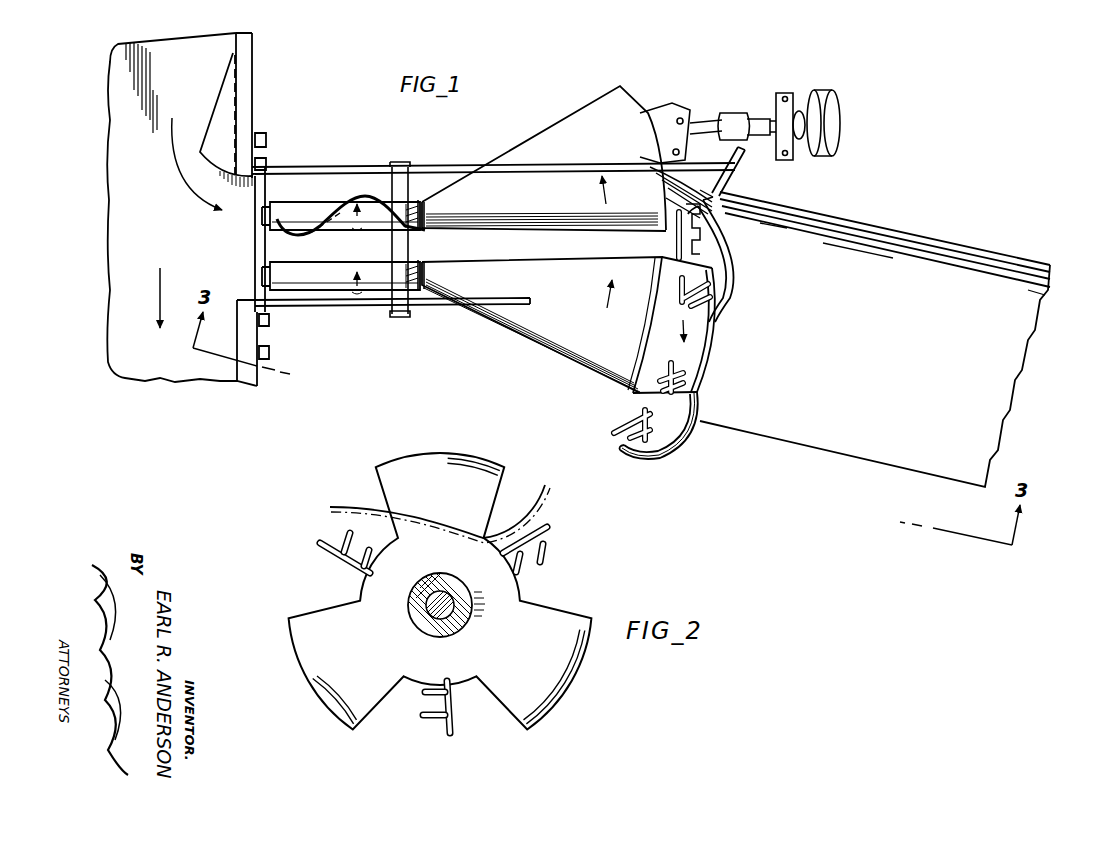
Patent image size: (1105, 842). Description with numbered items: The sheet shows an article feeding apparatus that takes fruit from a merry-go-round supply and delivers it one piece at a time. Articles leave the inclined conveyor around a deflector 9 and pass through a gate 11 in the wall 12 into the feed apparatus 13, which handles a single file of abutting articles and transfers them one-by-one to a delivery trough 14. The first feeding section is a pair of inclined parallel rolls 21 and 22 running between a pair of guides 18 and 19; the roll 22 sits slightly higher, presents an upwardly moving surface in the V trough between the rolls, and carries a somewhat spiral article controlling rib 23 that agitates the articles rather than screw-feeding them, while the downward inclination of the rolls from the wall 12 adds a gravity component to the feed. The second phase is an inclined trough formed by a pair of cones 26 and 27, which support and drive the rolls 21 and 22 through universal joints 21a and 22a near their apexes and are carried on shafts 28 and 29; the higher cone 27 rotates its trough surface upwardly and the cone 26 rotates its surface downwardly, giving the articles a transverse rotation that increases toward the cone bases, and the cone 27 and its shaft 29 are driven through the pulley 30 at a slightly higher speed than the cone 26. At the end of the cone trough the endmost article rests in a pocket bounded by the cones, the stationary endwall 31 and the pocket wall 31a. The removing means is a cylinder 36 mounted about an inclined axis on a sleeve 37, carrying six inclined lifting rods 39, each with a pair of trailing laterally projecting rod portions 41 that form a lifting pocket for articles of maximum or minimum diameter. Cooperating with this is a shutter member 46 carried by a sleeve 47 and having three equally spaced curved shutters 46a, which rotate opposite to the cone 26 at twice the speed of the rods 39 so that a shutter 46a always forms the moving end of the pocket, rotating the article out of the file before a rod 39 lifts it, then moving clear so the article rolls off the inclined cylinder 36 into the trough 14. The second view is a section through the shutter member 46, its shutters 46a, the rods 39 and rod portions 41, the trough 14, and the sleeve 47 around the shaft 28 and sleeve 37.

In FIG. 1, the deflector 9 is at (218, 125).
In FIG. 1, the gate 11 is at (255, 256).
In FIG. 1, the wall 12 is at (257, 377).
In FIG. 1, the feed apparatus 13 is at (492, 352).
In FIG. 1, the delivery trough 14 is at (936, 248).
In FIG. 2, the delivery trough 14 is at (546, 492).
In FIG. 1, the guide 18 is at (357, 168).
In FIG. 1, the guide 19 is at (346, 308).
In FIG. 1, the roll 21 is at (383, 262).
In FIG. 1, the universal joint 21a is at (412, 266).
In FIG. 1, the roll 22 is at (317, 208).
In FIG. 1, the universal joint 22a is at (430, 209).
In FIG. 1, the article controlling rib 23 is at (300, 240).
In FIG. 1, the cone 26 is at (583, 316).
In FIG. 1, the cone 27 is at (561, 199).
In FIG. 2, the shaft 28 is at (474, 605).
In FIG. 1, the shaft 29 is at (713, 132).
In FIG. 1, the pulley 30 is at (843, 123).
In FIG. 1, the endwall 31 is at (741, 172).
In FIG. 1, the pocket wall 31a is at (680, 182).
In FIG. 1, the cylinder 36 is at (695, 355).
In FIG. 2, the sleeve 37 is at (455, 593).
In FIG. 1, the rod 39 is at (686, 300).
In FIG. 2, the rod 39 is at (547, 527).
In FIG. 1, the laterally projecting rod portion 41 is at (715, 325).
In FIG. 2, the laterally projecting rod portion 41 is at (527, 570).
In FIG. 1, the shutter member 46 is at (698, 400).
In FIG. 2, the shutter member 46 is at (510, 655).
In FIG. 1, the shutter 46a is at (668, 458).
In FIG. 2, the shutter 46a is at (447, 455).
In FIG. 2, the sleeve 47 is at (417, 614).